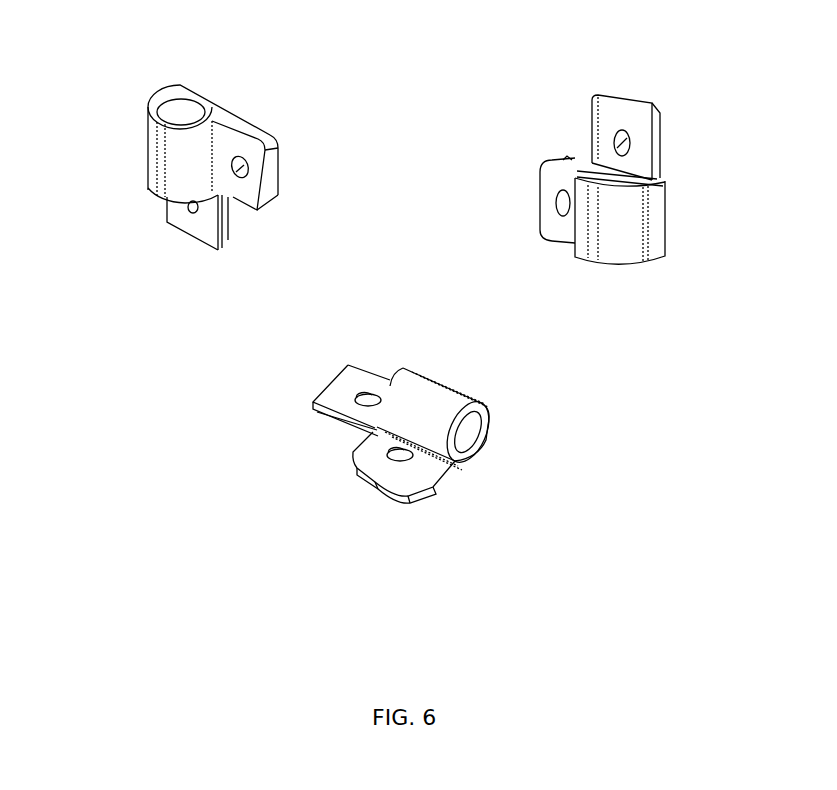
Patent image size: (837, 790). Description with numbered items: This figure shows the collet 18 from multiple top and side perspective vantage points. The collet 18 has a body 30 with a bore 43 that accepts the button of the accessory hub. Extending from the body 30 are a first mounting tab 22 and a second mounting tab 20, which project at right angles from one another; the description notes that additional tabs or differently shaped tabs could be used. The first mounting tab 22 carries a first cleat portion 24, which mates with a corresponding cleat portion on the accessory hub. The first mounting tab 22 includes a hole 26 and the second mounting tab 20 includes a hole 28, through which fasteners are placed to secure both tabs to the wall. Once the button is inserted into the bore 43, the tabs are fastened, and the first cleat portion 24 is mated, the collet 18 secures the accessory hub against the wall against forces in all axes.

The collet 18 is at (150, 82).
The second mounting tab 20 is at (275, 180).
The first mounting tab 22 is at (168, 218).
The first cleat portion 24 is at (225, 245).
The hole 26 is at (192, 220).
The hole 28 is at (250, 160).
The body 30 is at (152, 155).
The bore 43 is at (192, 117).